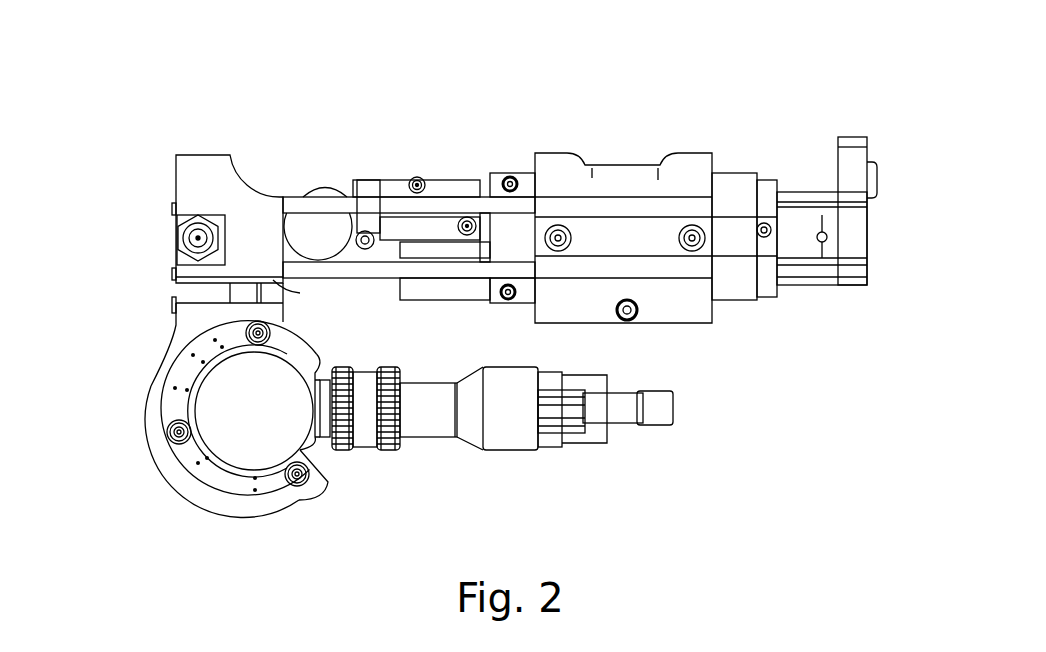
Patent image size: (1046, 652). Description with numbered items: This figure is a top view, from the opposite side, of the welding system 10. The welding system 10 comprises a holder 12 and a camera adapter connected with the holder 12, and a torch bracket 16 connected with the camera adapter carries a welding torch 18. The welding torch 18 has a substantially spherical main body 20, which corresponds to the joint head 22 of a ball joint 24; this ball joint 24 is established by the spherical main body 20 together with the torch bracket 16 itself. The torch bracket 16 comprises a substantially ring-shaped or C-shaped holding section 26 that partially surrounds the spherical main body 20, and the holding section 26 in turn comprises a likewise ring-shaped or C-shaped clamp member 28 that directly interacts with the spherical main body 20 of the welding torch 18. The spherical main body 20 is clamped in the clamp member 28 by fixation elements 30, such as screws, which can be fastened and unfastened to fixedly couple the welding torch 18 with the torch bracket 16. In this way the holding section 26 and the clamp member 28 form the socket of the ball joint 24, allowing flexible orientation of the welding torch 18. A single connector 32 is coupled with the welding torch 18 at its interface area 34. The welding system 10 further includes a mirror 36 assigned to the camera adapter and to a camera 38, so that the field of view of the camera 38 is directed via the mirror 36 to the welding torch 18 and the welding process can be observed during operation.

The welding system 10 is at (218, 121).
The holder 12 is at (852, 162).
The torch bracket 16 is at (216, 448).
The welding torch 18 is at (330, 355).
The spherical main body 20 is at (220, 388).
The joint head 22 is at (312, 350).
The ball joint 24 is at (335, 458).
The holding section 26 is at (275, 505).
The clamp member 28 is at (235, 480).
The fixation elements 30 is at (172, 440).
The single connector 32 is at (505, 440).
The interface area 34 is at (395, 358).
The mirror 36 is at (312, 228).
The camera 38 is at (378, 294).